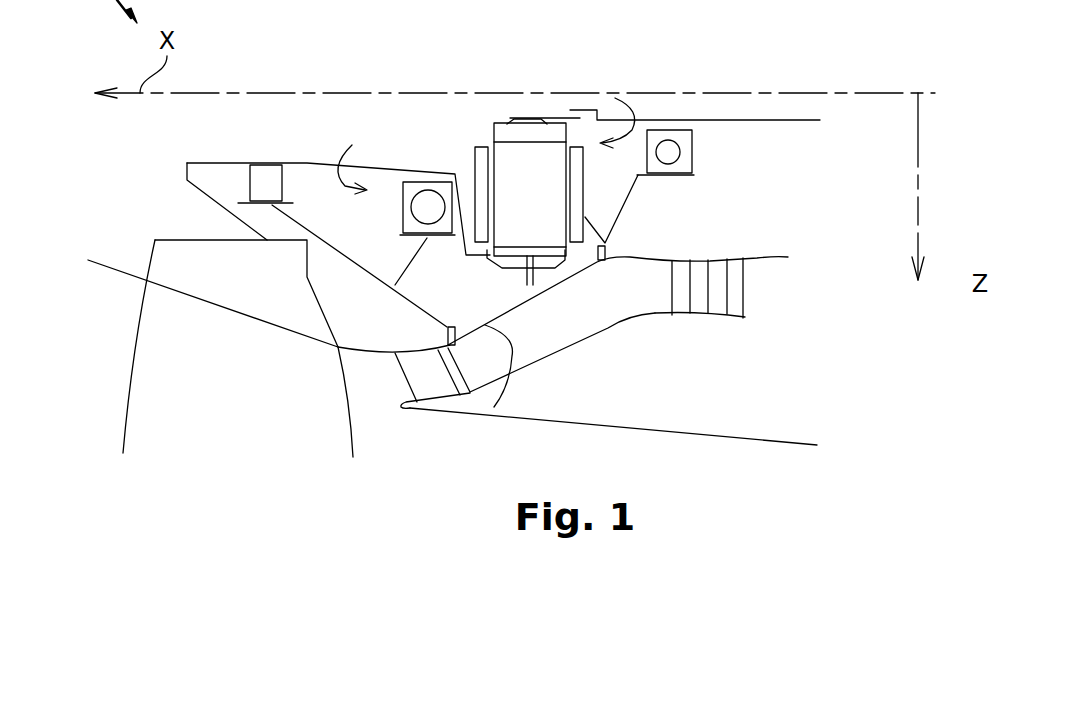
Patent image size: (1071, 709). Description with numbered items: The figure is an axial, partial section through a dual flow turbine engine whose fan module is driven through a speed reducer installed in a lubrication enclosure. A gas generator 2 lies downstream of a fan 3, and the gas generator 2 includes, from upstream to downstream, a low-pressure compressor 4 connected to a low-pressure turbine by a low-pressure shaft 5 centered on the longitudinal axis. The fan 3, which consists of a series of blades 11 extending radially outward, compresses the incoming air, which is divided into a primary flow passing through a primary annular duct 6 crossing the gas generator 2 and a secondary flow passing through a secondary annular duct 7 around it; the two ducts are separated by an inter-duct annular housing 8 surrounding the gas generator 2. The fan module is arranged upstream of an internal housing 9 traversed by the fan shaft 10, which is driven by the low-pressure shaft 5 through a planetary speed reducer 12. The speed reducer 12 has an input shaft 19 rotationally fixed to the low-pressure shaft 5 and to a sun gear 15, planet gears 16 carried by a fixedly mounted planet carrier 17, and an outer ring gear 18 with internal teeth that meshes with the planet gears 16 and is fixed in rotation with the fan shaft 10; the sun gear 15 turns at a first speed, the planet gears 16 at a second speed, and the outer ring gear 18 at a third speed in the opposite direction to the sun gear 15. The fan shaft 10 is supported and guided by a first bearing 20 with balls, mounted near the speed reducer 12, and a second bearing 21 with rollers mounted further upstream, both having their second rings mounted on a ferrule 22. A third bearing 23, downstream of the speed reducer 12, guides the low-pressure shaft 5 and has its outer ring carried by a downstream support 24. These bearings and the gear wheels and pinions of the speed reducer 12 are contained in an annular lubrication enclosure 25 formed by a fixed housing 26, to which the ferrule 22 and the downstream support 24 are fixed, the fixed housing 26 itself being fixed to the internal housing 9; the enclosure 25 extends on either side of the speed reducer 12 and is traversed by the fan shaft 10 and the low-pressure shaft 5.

The gas generator 2 is at (708, 342).
The fan 3 is at (108, 329).
The low-pressure compressor 4 is at (745, 318).
The low-pressure shaft 5 is at (784, 110).
The primary annular duct 6 is at (618, 324).
The secondary annular duct 7 is at (722, 463).
The inter-duct annular housing 8 is at (590, 387).
The internal housing 9 is at (758, 247).
The fan shaft 10 is at (212, 163).
The blades 11 is at (157, 412).
The speed reducer 12 is at (544, 100).
The sun gear 15 is at (502, 130).
The planet gears 16 is at (513, 150).
The planet carrier 17 is at (577, 172).
The outer ring gear 18 is at (514, 262).
The input shaft 19 is at (530, 118).
The first bearing 20 is at (409, 158).
The second bearing 21 is at (270, 148).
The ferrule 22 is at (357, 265).
The third bearing 23 is at (677, 116).
The downstream support 24 is at (623, 210).
The lubrication enclosure 25 is at (467, 146).
The fixed housing 26 is at (494, 407).